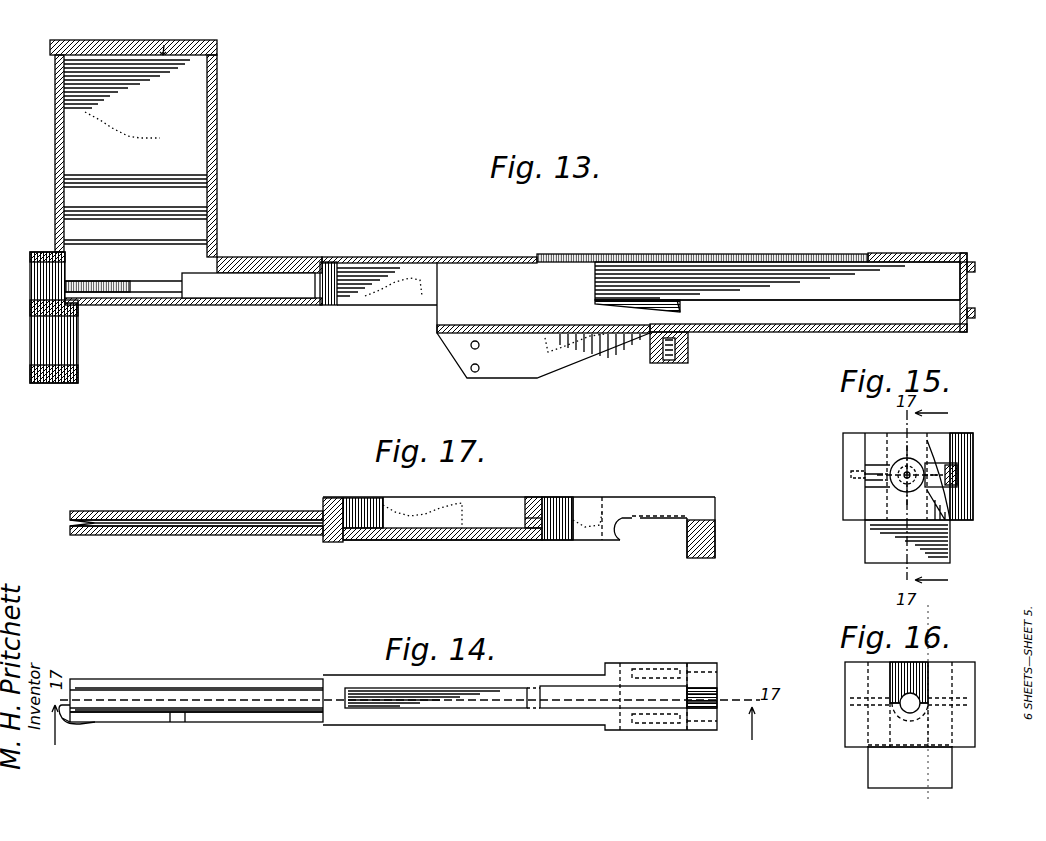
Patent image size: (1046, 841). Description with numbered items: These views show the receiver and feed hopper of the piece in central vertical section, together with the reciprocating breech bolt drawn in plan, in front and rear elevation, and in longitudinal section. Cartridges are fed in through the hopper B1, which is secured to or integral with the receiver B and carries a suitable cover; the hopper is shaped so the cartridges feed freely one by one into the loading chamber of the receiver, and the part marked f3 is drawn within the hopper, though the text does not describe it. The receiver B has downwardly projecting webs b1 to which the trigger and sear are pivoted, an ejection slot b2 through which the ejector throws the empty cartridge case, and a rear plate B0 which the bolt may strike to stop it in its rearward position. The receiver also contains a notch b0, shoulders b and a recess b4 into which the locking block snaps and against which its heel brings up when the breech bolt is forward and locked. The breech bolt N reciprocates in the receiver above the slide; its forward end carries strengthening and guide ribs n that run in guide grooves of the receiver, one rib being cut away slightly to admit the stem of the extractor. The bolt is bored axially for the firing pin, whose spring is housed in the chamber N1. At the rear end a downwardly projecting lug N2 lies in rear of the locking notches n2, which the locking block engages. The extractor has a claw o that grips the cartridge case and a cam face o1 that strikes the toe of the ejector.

In FIG. 13, the receiver B is at (432, 257).
In FIG. 13, the rear plate B0 is at (975, 275).
In FIG. 13, the hopper B1 is at (205, 102).
In FIG. 13, the shoulder b is at (676, 305).
In FIG. 13, the notch b0 is at (648, 306).
In FIG. 13, the downwardly projecting webs b1 is at (445, 362).
In FIG. 13, the ejection slot b2 is at (248, 283).
In FIG. 13, the recess b4 is at (790, 300).
In FIG. 13, the magazine follower f3 is at (164, 45).
In FIG. 17, the breech bolt N is at (186, 511).
In FIG. 14, the breech bolt N is at (210, 679).
In FIG. 15, the breech bolt N is at (890, 495).
In FIG. 16, the breech bolt N is at (845, 732).
In FIG. 17, the chamber N1 is at (368, 528).
In FIG. 14, the chamber N1 is at (468, 708).
In FIG. 17, the downwardly projecting lug N2 is at (702, 558).
In FIG. 14, the downwardly projecting lug N2 is at (700, 730).
In FIG. 15, the downwardly projecting lug N2 is at (868, 545).
In FIG. 16, the downwardly projecting lug N2 is at (870, 772).
In FIG. 14, the strengthening and guide ribs n is at (132, 683).
In FIG. 15, the strengthening and guide ribs n is at (872, 462).
In FIG. 17, the locking notches n2 is at (630, 540).
In FIG. 14, the claw o is at (92, 724).
In FIG. 15, the claw o is at (935, 462).
In FIG. 14, the cam face o1 is at (76, 726).
In FIG. 15, the cam face o1 is at (960, 482).